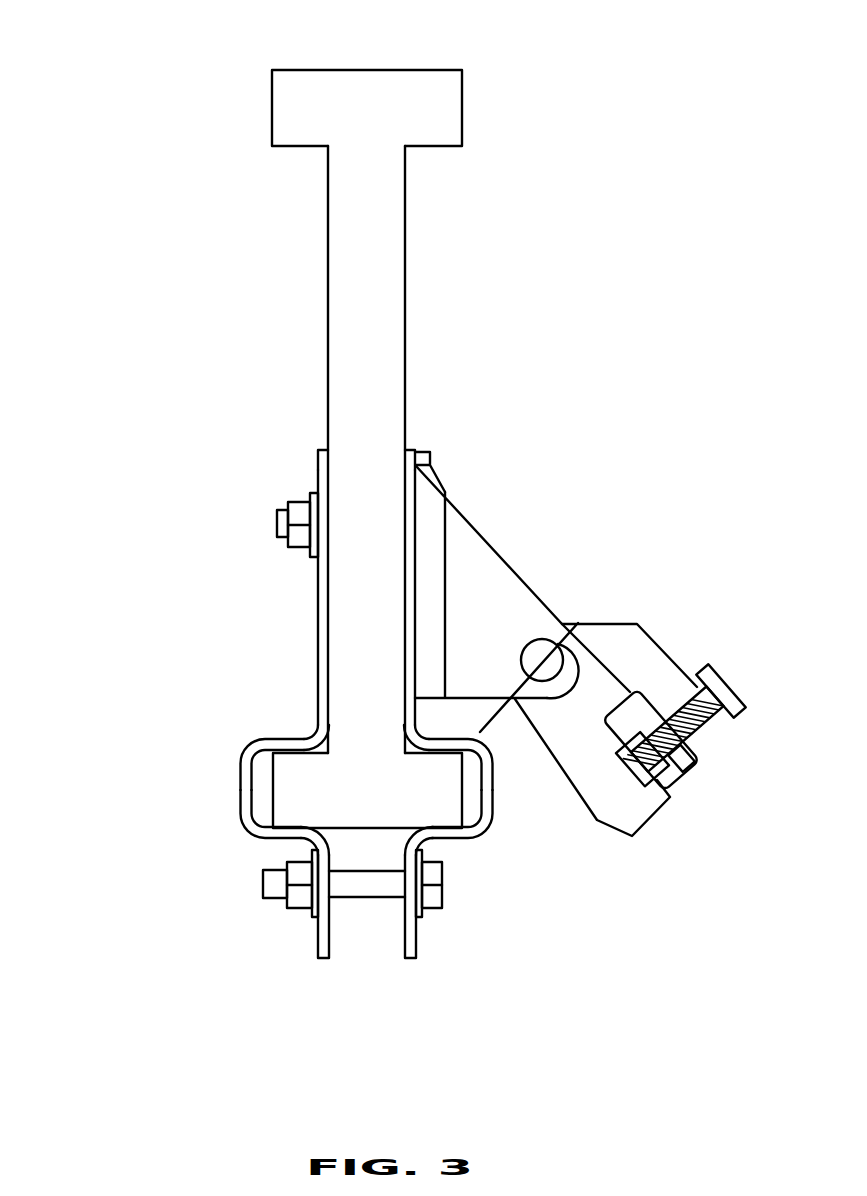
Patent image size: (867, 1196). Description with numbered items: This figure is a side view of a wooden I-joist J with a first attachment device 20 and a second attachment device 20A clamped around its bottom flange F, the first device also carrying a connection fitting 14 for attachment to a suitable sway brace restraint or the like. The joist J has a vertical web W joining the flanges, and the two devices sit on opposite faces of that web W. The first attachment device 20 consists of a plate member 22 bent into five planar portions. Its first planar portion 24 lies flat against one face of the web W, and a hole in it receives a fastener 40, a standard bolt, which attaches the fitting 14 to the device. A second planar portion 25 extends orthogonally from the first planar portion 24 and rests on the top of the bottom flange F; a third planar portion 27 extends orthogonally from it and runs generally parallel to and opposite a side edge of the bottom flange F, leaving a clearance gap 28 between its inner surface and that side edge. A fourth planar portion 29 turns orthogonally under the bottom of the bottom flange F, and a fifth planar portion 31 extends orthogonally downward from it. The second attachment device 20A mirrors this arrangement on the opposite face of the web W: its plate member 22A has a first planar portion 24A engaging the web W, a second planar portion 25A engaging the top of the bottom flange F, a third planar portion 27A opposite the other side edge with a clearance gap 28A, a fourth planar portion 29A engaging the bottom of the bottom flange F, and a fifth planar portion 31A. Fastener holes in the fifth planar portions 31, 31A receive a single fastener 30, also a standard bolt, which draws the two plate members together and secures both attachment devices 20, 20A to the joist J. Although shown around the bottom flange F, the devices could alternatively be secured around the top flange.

The I-joist J is at (470, 62).
The bottom flange F is at (293, 106).
The web W is at (336, 238).
The connection fitting 14 is at (480, 556).
The attachment device 20 is at (537, 872).
The second attachment device 20A is at (148, 848).
The plate member 22 is at (413, 442).
The plate member 22A is at (310, 443).
The first planar portion 24 is at (407, 532).
The first planar portion 24A is at (315, 613).
The second planar portion 25 is at (585, 622).
The second planar portion 25A is at (280, 743).
The third planar portion 27 is at (490, 793).
The third planar portion 27A is at (245, 772).
The clearance gap 28 is at (470, 778).
The clearance gap 28A is at (262, 804).
The fourth planar portion 29 is at (453, 836).
The fourth planar portion 29A is at (280, 834).
The fastener 30 is at (438, 885).
The fifth planar portion 31 is at (405, 955).
The fifth planar portion 31A is at (323, 927).
The fastener 40 is at (276, 521).